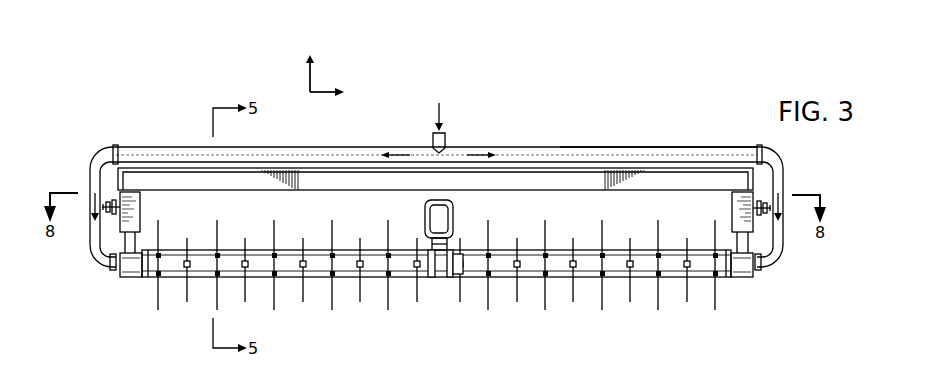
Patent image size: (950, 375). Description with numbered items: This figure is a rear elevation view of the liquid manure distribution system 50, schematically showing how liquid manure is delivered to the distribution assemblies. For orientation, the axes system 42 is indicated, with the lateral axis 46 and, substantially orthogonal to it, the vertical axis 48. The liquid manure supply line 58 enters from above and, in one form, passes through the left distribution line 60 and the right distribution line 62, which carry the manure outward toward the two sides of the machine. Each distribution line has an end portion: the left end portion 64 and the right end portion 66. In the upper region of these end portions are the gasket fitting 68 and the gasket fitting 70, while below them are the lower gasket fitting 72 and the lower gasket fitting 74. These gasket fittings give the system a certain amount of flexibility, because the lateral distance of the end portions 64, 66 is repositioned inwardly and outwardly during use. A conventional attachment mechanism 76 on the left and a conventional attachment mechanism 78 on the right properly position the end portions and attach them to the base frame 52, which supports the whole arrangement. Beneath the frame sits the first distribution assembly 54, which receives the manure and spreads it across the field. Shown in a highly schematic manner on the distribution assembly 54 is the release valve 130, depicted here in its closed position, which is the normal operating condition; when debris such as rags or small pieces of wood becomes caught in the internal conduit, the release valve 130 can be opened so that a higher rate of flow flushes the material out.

The axes system 42 is at (340, 49).
The lateral axis 46 is at (327, 93).
The vertical axis 48 is at (310, 78).
The liquid manure distribution system 50 is at (90, 126).
The base frame 52 is at (585, 177).
The distribution assembly 54 is at (150, 322).
The liquid manure supply line 58 is at (446, 136).
The left distribution line 60 is at (150, 146).
The right distribution line 62 is at (660, 152).
The end portion 64 is at (89, 237).
The end portion 66 is at (782, 187).
The gasket fitting 68 is at (114, 145).
The gasket fitting 70 is at (740, 145).
The lower gasket fitting 72 is at (110, 268).
The lower gasket fitting 74 is at (762, 272).
The attachment mechanism 76 is at (108, 203).
The attachment mechanism 78 is at (765, 213).
The release valve 130 is at (446, 279).